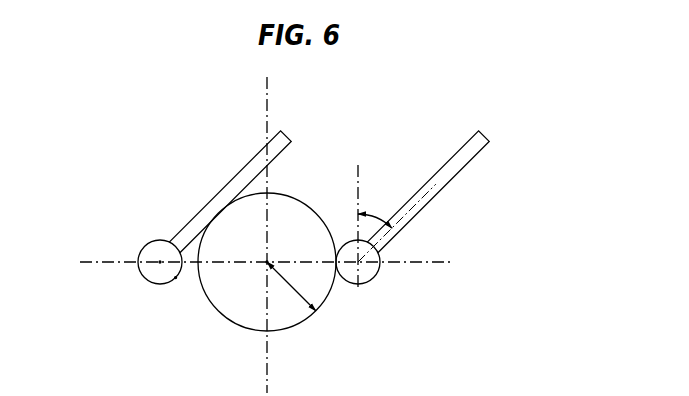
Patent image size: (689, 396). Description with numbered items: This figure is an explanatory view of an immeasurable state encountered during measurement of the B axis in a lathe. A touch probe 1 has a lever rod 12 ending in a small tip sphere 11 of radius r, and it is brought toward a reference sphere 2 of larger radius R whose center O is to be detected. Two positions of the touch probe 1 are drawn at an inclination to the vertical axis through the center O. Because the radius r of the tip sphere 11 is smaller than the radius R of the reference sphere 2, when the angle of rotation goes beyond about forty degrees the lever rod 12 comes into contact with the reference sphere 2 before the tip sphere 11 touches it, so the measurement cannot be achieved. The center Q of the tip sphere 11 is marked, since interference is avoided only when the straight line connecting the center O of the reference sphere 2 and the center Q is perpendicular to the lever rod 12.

The touch probe 1 is at (318, 165).
The lever rod 12 is at (247, 165).
The reference sphere 2 is at (247, 317).
The tip sphere 11 is at (147, 272).
The center of the reference sphere O is at (267, 262).
The radius of the reference sphere R is at (291, 292).
The radius of the tip sphere r is at (160, 262).
The center of the tip sphere Q is at (176, 278).